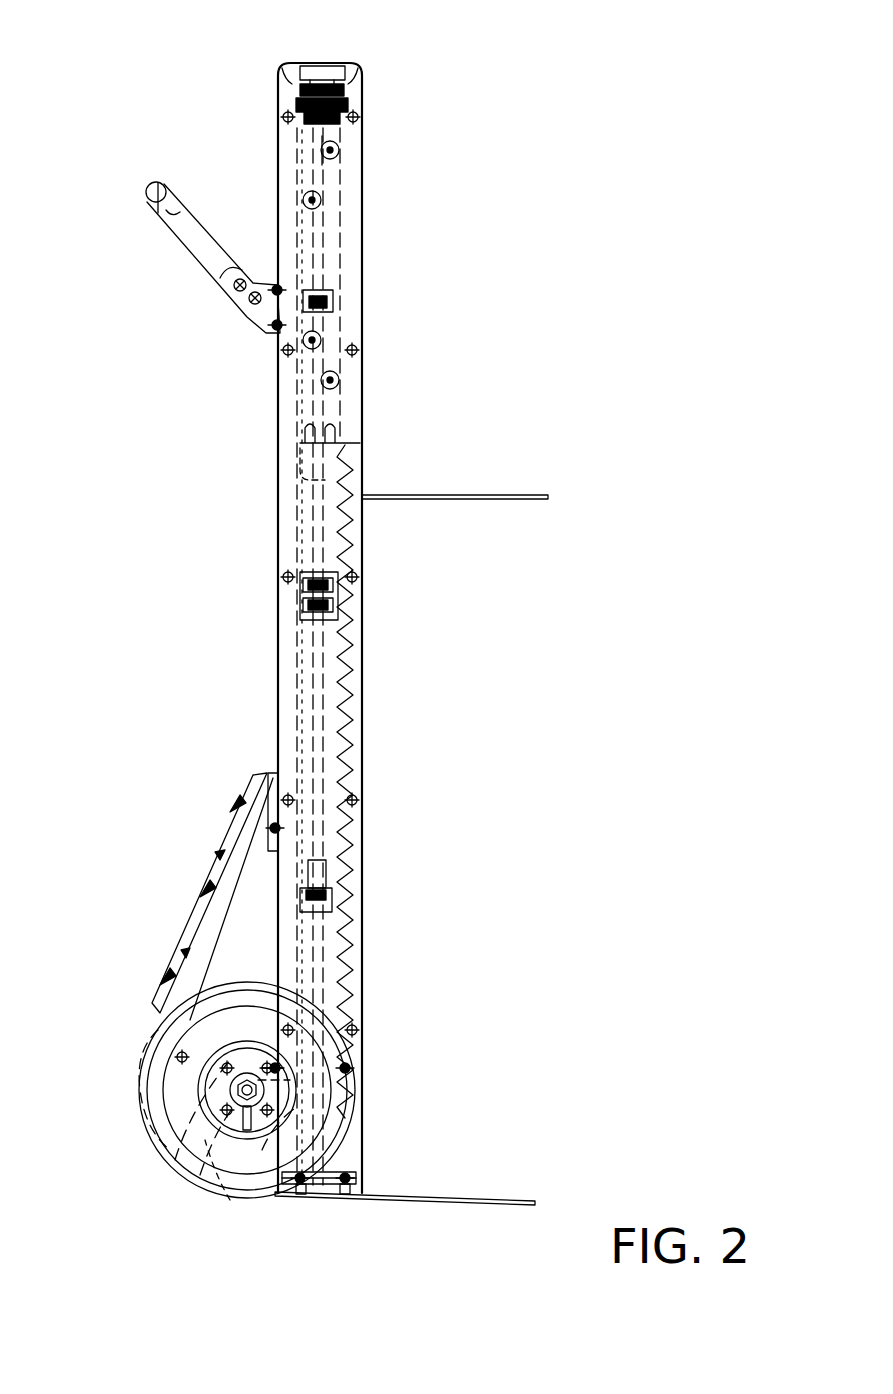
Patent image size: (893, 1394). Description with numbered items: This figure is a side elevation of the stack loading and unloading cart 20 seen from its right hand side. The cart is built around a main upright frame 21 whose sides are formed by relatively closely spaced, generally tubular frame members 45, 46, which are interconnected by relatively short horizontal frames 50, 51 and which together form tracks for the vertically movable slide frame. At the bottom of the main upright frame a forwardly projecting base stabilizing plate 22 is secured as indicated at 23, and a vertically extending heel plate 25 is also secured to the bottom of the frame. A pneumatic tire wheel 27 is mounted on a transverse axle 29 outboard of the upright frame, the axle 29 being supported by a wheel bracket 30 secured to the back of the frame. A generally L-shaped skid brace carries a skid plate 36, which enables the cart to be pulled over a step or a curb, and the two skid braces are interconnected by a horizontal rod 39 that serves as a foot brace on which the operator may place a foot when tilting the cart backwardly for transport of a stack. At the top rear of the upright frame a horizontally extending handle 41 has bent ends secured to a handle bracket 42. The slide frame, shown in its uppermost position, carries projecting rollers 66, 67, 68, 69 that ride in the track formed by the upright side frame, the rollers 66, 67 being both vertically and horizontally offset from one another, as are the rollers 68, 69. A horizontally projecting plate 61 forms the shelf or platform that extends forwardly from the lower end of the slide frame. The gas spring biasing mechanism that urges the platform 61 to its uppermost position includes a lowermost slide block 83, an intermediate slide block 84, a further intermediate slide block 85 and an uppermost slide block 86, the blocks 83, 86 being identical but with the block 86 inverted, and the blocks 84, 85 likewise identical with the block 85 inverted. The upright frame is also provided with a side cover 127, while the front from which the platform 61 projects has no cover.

The stack loading and unloading cart 20 is at (370, 653).
The main upright frame 21 is at (363, 826).
The base stabilizing plate 22 is at (462, 1203).
The securing point of base plate 23 is at (343, 1197).
The heel plate 25 is at (200, 1183).
The pneumatic tire wheel 27 is at (148, 1131).
The transverse axle 29 is at (150, 1148).
The wheel bracket 30 is at (238, 1200).
The skid plate 36 is at (210, 892).
The horizontal rod 39 is at (232, 1085).
The handle 41 is at (143, 200).
The handle bracket 42 is at (262, 318).
The tubular frame member 45 is at (305, 503).
The tubular frame member 46 is at (352, 548).
The short horizontal frame 50 is at (322, 62).
The short horizontal frame 51 is at (302, 1197).
The horizontally projecting plate 61 is at (488, 496).
The roller 66 is at (345, 150).
The roller 67 is at (303, 200).
The roller 68 is at (345, 335).
The roller 69 is at (345, 378).
The lowermost slide block 83 is at (333, 902).
The intermediate slide block 84 is at (300, 620).
The further intermediate slide block 85 is at (310, 590).
The uppermost slide block 86 is at (336, 300).
The side cover 127 is at (338, 230).